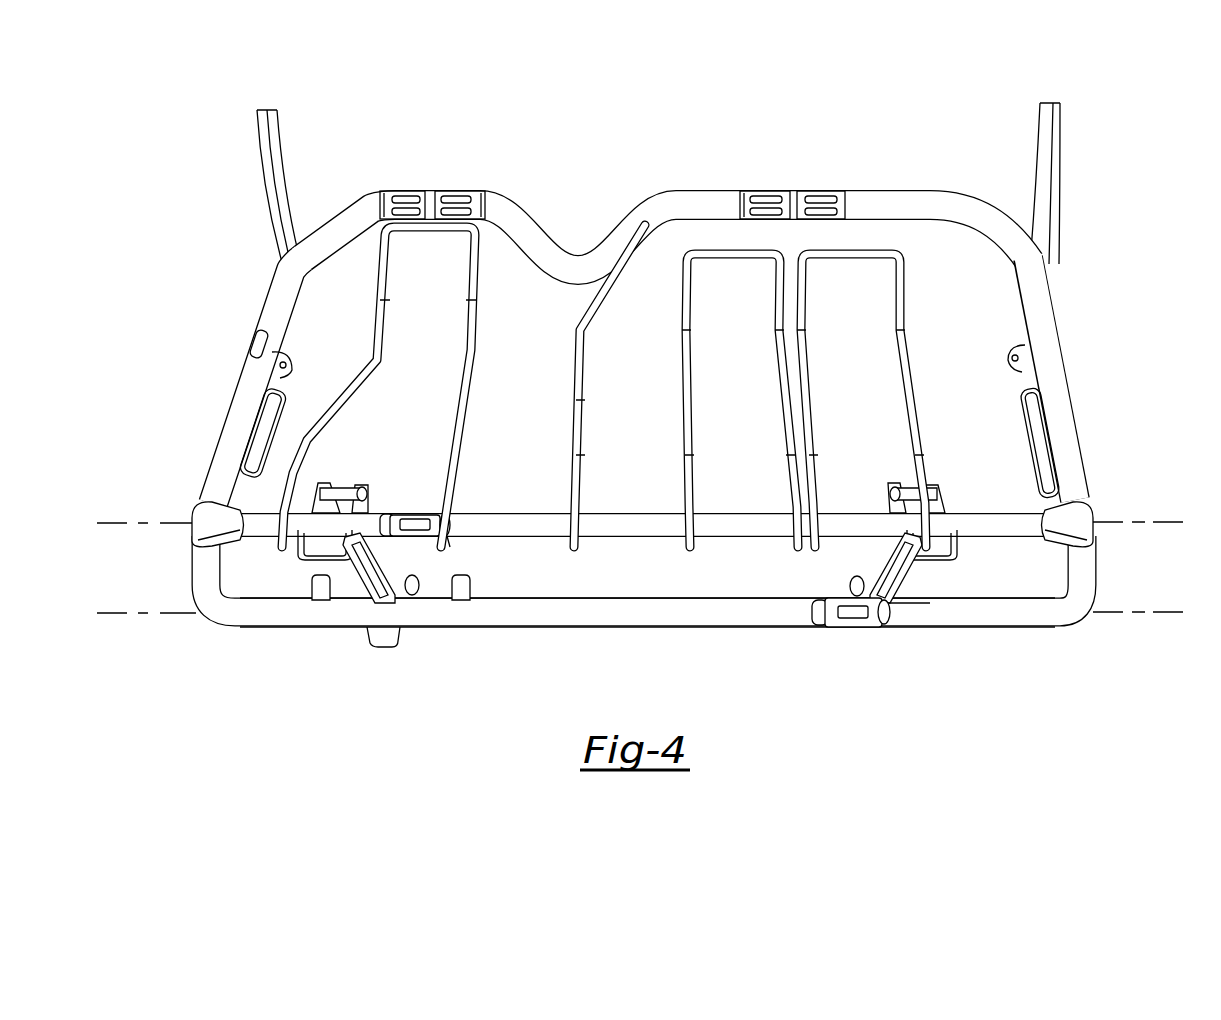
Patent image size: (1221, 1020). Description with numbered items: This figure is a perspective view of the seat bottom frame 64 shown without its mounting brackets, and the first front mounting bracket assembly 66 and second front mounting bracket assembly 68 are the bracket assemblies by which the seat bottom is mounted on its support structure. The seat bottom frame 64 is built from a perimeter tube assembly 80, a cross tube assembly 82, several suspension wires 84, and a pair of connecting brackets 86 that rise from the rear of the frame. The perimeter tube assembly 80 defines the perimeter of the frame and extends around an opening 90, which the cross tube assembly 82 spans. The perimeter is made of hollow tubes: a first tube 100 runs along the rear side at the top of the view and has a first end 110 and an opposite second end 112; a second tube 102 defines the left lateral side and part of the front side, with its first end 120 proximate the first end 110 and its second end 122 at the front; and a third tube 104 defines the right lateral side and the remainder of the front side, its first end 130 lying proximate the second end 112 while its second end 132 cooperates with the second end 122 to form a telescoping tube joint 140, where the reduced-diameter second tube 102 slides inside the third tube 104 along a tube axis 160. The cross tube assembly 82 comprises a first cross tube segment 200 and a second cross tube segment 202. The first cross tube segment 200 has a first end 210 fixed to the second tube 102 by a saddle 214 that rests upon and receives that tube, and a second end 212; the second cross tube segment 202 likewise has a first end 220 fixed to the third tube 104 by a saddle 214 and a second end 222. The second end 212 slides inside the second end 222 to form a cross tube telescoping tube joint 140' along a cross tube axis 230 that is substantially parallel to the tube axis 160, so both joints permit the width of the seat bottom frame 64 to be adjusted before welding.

The seat bottom frame 64 is at (292, 642).
The first front mounting bracket assembly 66 is at (381, 594).
The second front mounting bracket assembly 68 is at (912, 586).
The perimeter tube assembly 80 is at (615, 628).
The cross tube assembly 82 is at (601, 511).
The suspension wire 84 is at (380, 352).
The connecting bracket 86 is at (268, 172).
The opening 90 is at (642, 313).
The first tube 100 is at (642, 313).
The second tube 102 is at (256, 402).
The third tube 104 is at (1066, 425).
The first end 110 is at (433, 190).
The second end 112 is at (793, 190).
The first end 120 is at (428, 190).
The second end 122 is at (892, 613).
The first end 130 is at (798, 190).
The second end 132 is at (828, 598).
The telescoping tube joint 140 is at (859, 623).
The cross tube telescoping tube joint 140' is at (433, 507).
The tube axis 160 is at (1172, 614).
The first cross tube segment 200 is at (270, 537).
The second cross tube segment 202 is at (708, 537).
The first end 210 is at (196, 508).
The second end 212 is at (450, 524).
The saddle 214 is at (633, 503).
The first end 220 is at (1091, 508).
The second end 222 is at (388, 536).
The cross tube axis 230 is at (1172, 524).